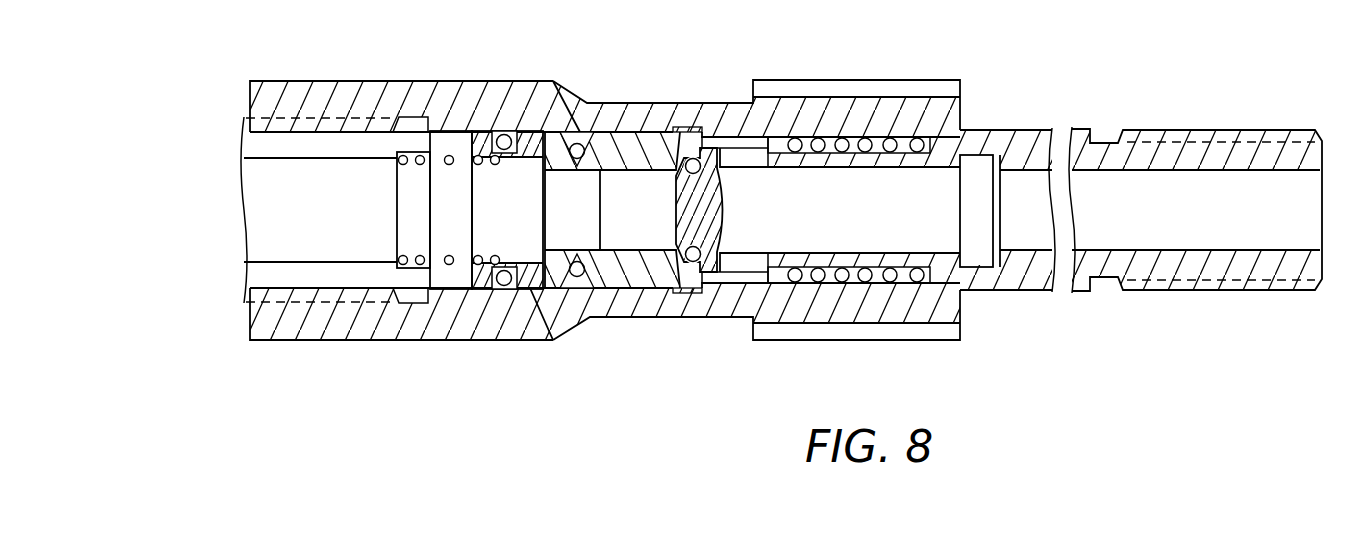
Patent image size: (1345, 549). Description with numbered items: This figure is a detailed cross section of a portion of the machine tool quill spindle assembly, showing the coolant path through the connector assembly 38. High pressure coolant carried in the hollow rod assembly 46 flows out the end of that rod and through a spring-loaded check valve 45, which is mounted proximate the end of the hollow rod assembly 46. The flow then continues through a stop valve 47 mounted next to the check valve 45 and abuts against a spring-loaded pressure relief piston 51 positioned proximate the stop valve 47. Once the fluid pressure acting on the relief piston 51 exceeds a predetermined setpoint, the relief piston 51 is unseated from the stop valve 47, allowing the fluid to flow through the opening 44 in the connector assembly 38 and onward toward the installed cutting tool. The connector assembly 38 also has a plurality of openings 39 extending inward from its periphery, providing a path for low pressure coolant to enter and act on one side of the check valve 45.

The connector assembly 38 is at (373, 328).
The openings 39 is at (570, 97).
The opening 44 is at (1023, 190).
The spring-loaded check valve 45 is at (488, 283).
The hollow rod assembly 46 is at (292, 277).
The stop valve 47 is at (663, 270).
The spring-loaded pressure relief piston 51 is at (875, 258).